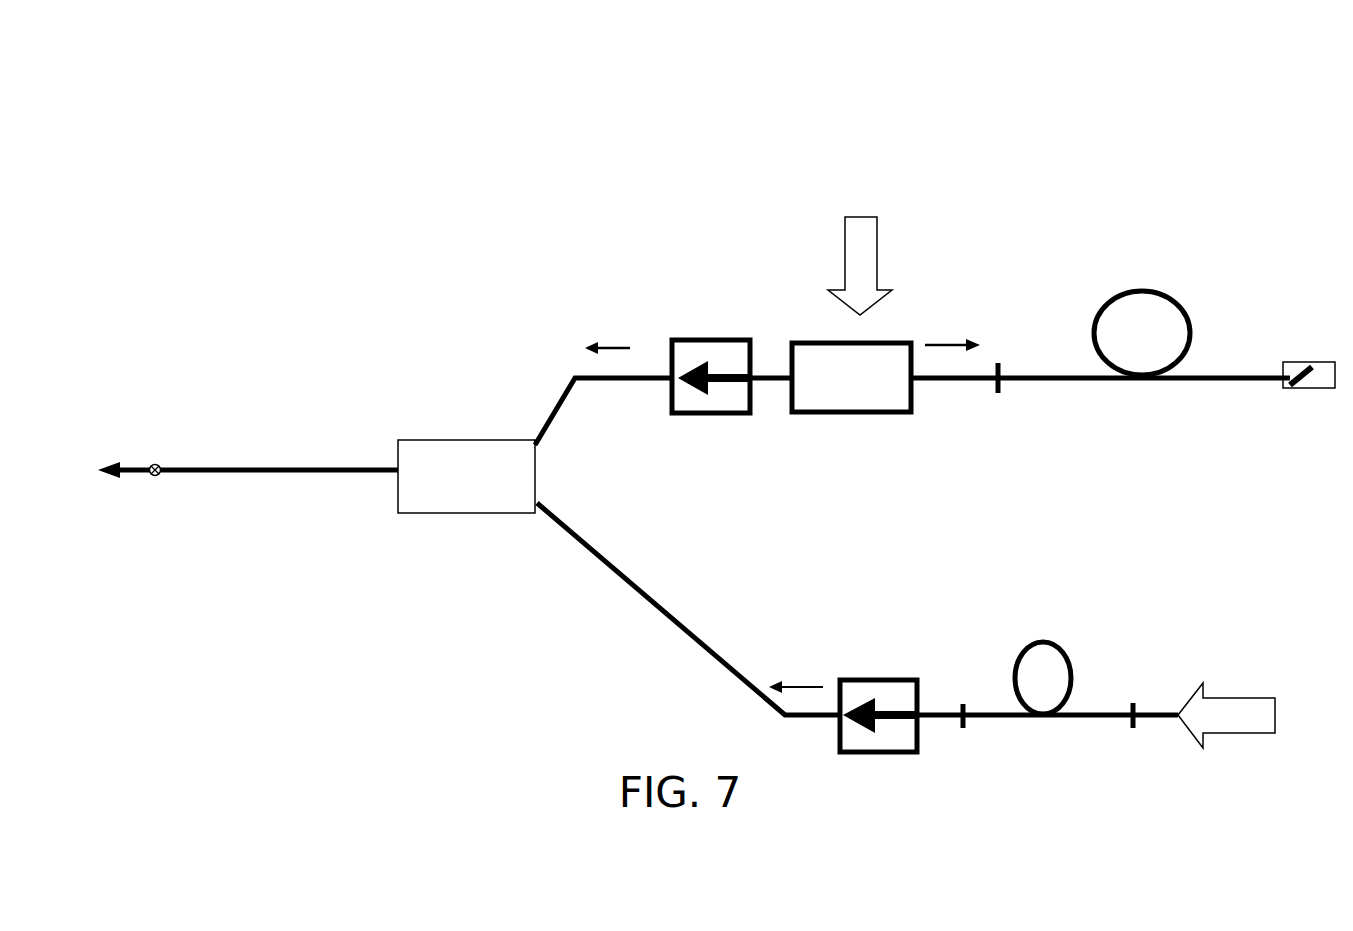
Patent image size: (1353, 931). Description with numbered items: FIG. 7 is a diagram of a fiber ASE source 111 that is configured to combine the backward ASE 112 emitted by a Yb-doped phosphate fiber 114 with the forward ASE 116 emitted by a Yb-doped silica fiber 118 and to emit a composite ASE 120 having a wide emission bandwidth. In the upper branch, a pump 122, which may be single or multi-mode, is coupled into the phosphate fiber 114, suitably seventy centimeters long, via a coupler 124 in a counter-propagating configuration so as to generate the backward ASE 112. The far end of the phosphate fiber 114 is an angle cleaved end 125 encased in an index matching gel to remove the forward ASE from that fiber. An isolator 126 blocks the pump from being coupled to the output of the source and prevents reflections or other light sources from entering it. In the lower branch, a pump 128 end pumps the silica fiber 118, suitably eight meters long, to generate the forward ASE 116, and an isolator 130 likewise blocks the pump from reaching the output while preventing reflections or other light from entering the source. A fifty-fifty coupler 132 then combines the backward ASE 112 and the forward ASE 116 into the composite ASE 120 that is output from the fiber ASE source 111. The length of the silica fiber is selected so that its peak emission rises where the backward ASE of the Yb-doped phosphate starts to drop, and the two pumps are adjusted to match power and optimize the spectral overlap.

The fiber ASE source 111 is at (323, 140).
The backward ASE 112 is at (607, 348).
The Yb-doped phosphate fiber 114 is at (1158, 292).
The forward ASE 116 is at (797, 690).
The Yb-doped silica fiber 118 is at (1065, 652).
The composite ASE 120 is at (130, 463).
The pump 122 is at (870, 247).
The coupler 124 is at (853, 413).
The angle cleaved end 125 is at (1300, 360).
The isolator 126 is at (698, 340).
The pump 128 is at (1253, 733).
The isolator 130 is at (875, 752).
The 50/50 coupler 132 is at (463, 513).